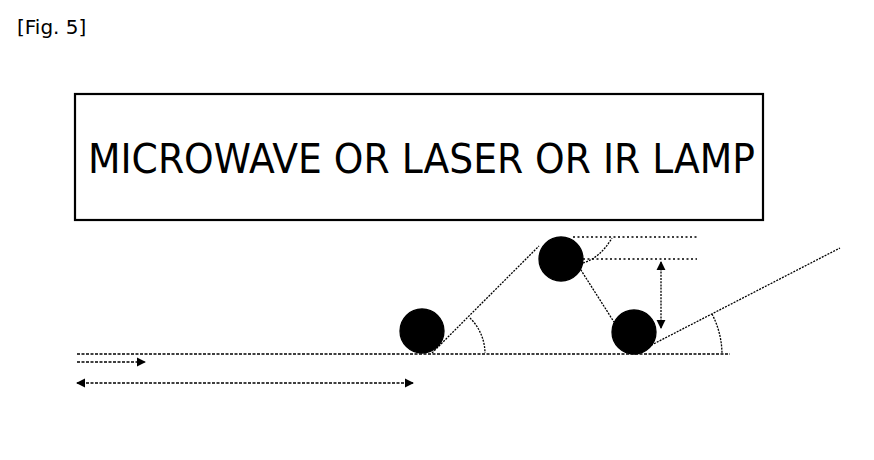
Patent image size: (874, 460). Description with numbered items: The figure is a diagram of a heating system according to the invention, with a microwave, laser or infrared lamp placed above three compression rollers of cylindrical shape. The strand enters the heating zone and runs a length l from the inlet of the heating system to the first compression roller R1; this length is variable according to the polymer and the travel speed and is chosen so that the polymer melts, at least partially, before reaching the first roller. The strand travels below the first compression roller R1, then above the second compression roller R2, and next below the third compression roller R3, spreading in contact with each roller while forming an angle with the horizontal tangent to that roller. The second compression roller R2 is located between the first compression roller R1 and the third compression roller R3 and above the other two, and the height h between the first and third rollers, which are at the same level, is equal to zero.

The first compression roller R1 is at (419, 321).
The second compression roller R2 is at (560, 275).
The third compression roller R3 is at (634, 322).
The height difference h is at (680, 295).
The length between heating system inlet and first roller l is at (245, 401).